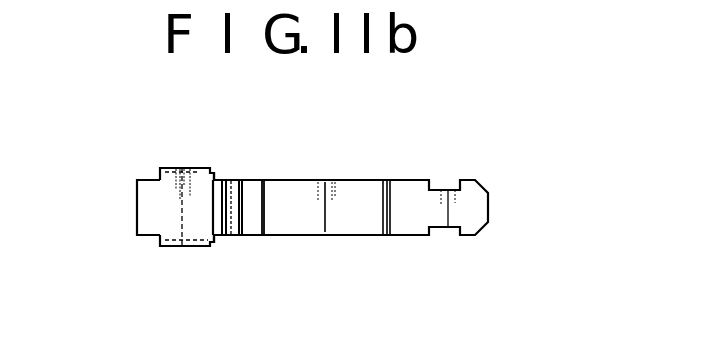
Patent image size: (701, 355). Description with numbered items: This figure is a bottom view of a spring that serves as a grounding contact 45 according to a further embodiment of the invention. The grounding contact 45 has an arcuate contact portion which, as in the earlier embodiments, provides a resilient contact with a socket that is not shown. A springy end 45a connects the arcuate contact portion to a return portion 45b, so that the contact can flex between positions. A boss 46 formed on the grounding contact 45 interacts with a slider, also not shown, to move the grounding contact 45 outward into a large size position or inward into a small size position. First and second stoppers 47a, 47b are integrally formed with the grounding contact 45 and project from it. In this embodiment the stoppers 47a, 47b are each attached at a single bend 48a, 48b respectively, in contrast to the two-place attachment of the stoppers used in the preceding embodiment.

The grounding contact 45 is at (315, 222).
The springy end 45a is at (137, 192).
The return portion 45b is at (253, 202).
The boss 46 is at (243, 193).
The first stopper 47a is at (212, 172).
The second stopper 47b is at (212, 246).
The single bend 48a is at (172, 167).
The single bend 48b is at (178, 247).